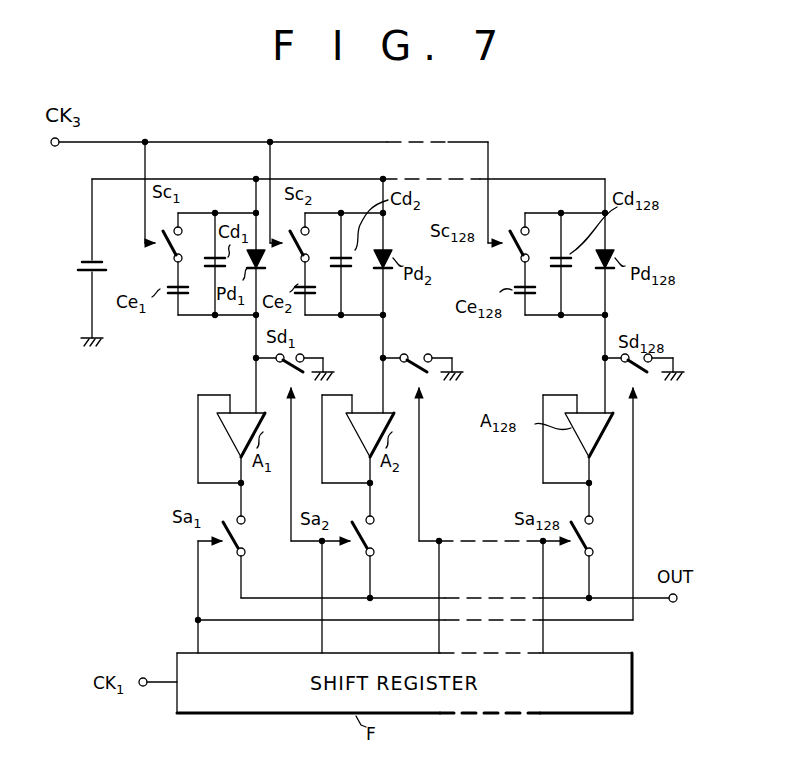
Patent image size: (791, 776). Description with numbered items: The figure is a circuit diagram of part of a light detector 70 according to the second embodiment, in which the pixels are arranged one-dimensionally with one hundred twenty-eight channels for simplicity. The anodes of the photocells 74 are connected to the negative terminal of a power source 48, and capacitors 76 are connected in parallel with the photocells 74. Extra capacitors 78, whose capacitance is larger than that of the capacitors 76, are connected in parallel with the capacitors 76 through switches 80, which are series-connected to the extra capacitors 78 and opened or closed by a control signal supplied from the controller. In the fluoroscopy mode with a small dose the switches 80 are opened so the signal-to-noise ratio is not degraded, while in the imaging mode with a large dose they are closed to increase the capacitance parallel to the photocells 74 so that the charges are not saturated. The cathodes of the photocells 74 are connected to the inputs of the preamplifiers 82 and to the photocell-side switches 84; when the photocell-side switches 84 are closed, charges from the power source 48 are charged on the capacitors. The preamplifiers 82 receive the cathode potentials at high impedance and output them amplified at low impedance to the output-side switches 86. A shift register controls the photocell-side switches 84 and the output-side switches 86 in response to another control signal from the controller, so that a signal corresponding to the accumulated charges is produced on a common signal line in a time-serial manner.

The power source 48 is at (82, 260).
The light detector 70 is at (497, 143).
The photocells 74 is at (611, 312).
The capacitors 76 is at (582, 272).
The extra capacitors 78 is at (174, 305).
The switches 80 is at (190, 245).
The amplifier A1 82 is at (234, 459).
The switch Sd1 84 is at (308, 352).
The switches 86 is at (193, 553).